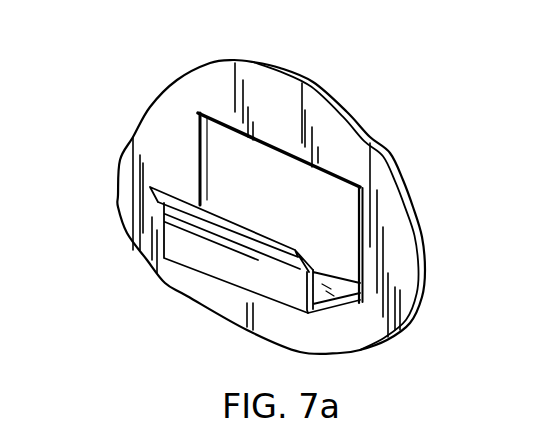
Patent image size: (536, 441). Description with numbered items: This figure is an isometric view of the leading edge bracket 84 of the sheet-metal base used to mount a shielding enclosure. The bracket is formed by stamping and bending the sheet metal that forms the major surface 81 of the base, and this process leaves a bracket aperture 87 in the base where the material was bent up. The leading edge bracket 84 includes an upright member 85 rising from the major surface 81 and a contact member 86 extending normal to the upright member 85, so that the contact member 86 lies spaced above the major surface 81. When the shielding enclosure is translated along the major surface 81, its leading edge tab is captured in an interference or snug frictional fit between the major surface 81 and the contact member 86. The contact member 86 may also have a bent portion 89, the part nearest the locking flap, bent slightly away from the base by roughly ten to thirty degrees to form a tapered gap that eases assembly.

The leading edge bracket 84 is at (200, 47).
The major surface 81 is at (335, 118).
The bracket aperture 87 is at (337, 205).
The bent portion 89 is at (157, 204).
The contact member 86 is at (207, 258).
The upright member 85 is at (320, 288).